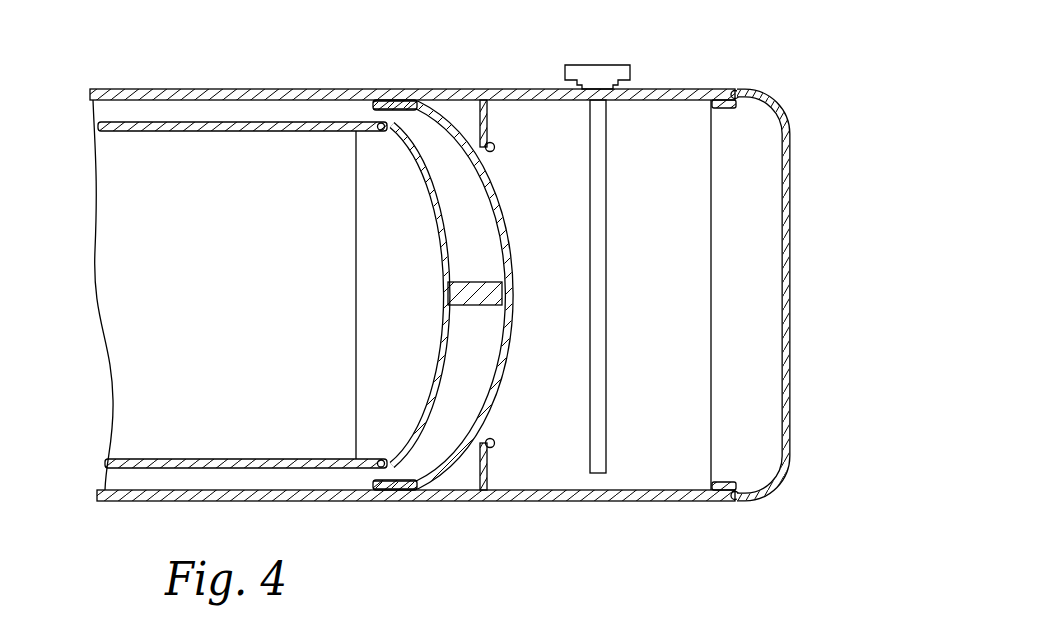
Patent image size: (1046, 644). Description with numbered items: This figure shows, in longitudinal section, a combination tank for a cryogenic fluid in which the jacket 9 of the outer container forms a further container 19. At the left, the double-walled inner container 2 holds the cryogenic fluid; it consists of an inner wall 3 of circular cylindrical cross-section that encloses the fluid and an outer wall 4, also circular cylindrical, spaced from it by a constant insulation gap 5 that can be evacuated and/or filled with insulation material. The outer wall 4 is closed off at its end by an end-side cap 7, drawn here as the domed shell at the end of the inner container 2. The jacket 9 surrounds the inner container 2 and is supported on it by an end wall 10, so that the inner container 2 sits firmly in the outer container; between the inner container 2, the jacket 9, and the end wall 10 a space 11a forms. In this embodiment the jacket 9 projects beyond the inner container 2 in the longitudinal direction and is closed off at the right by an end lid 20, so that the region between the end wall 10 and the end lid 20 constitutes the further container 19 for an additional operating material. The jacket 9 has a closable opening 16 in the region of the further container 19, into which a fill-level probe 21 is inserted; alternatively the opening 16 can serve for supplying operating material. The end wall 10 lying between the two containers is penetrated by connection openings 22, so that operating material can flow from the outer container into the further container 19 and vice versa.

The inner container 2 is at (206, 317).
The inner wall 3 is at (118, 126).
The outer wall 4 is at (175, 100).
The insulation gap 5 is at (257, 113).
The end-side cap 7 is at (508, 350).
The jacket 9 is at (357, 90).
The end wall 10 is at (493, 130).
The space 11a is at (475, 95).
The closable opening 16 is at (605, 87).
The further container 19 is at (680, 382).
The end lid 20 is at (788, 273).
The fill-level probe 21 is at (593, 177).
The connection openings 22 is at (492, 113).